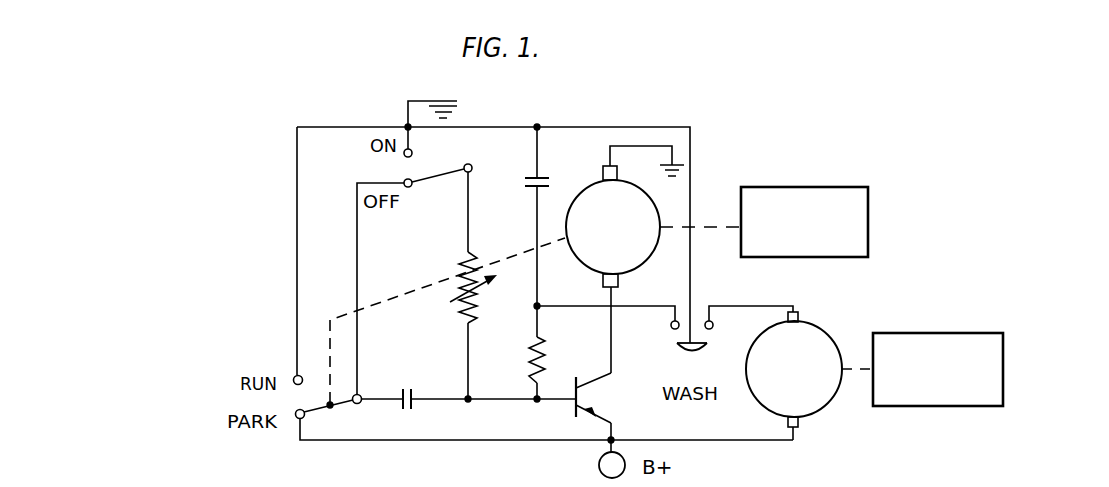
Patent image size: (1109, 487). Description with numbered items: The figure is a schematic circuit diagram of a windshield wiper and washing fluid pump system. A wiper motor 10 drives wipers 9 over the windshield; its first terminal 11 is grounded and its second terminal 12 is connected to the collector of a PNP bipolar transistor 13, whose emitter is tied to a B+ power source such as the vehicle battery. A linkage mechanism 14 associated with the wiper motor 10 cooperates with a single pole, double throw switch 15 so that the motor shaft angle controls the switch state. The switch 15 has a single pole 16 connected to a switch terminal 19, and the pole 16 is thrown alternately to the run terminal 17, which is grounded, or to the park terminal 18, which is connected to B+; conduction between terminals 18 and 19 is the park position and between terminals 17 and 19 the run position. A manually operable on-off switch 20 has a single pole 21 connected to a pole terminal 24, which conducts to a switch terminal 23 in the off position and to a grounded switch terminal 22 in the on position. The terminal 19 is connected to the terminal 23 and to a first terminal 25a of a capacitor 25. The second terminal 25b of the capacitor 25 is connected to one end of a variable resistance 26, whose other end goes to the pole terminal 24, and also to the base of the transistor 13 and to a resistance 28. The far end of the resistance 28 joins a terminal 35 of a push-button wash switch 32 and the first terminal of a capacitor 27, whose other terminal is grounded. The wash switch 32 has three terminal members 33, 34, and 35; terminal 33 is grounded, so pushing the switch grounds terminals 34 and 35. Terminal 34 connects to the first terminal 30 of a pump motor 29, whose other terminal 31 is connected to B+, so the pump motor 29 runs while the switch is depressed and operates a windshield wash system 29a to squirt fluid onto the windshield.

The wipers 9 is at (820, 187).
The wiper motor 10 is at (648, 261).
The first terminal 11 is at (618, 172).
The second terminal 12 is at (600, 283).
The PNP bipolar transistor 13 is at (562, 410).
The linkage mechanism 14 is at (395, 292).
The single pole, double throw switch 15 is at (295, 403).
The single pole 16 is at (322, 406).
The run terminal 17 is at (292, 372).
The park terminal 18 is at (297, 420).
The switch terminal 19 is at (362, 396).
The on-off switch 20 is at (415, 170).
The single pole 21 is at (438, 174).
The switch terminal 22 is at (411, 150).
The switch terminal 23 is at (411, 186).
The pole terminal 24 is at (471, 171).
The capacitor 25 is at (424, 404).
The first terminal 25a is at (373, 404).
The second terminal 25b is at (437, 401).
The variable resistance 26 is at (466, 272).
The capacitor 27 is at (543, 176).
The resistance 28 is at (535, 368).
The pump motor 29 is at (832, 336).
The windshield wash system 29a is at (933, 333).
The first terminal 30 is at (798, 315).
The other terminal 31 is at (798, 424).
The wash switch 32 is at (729, 368).
The terminal member 33 is at (676, 343).
The terminal member 34 is at (713, 323).
The terminal member 35 is at (669, 323).